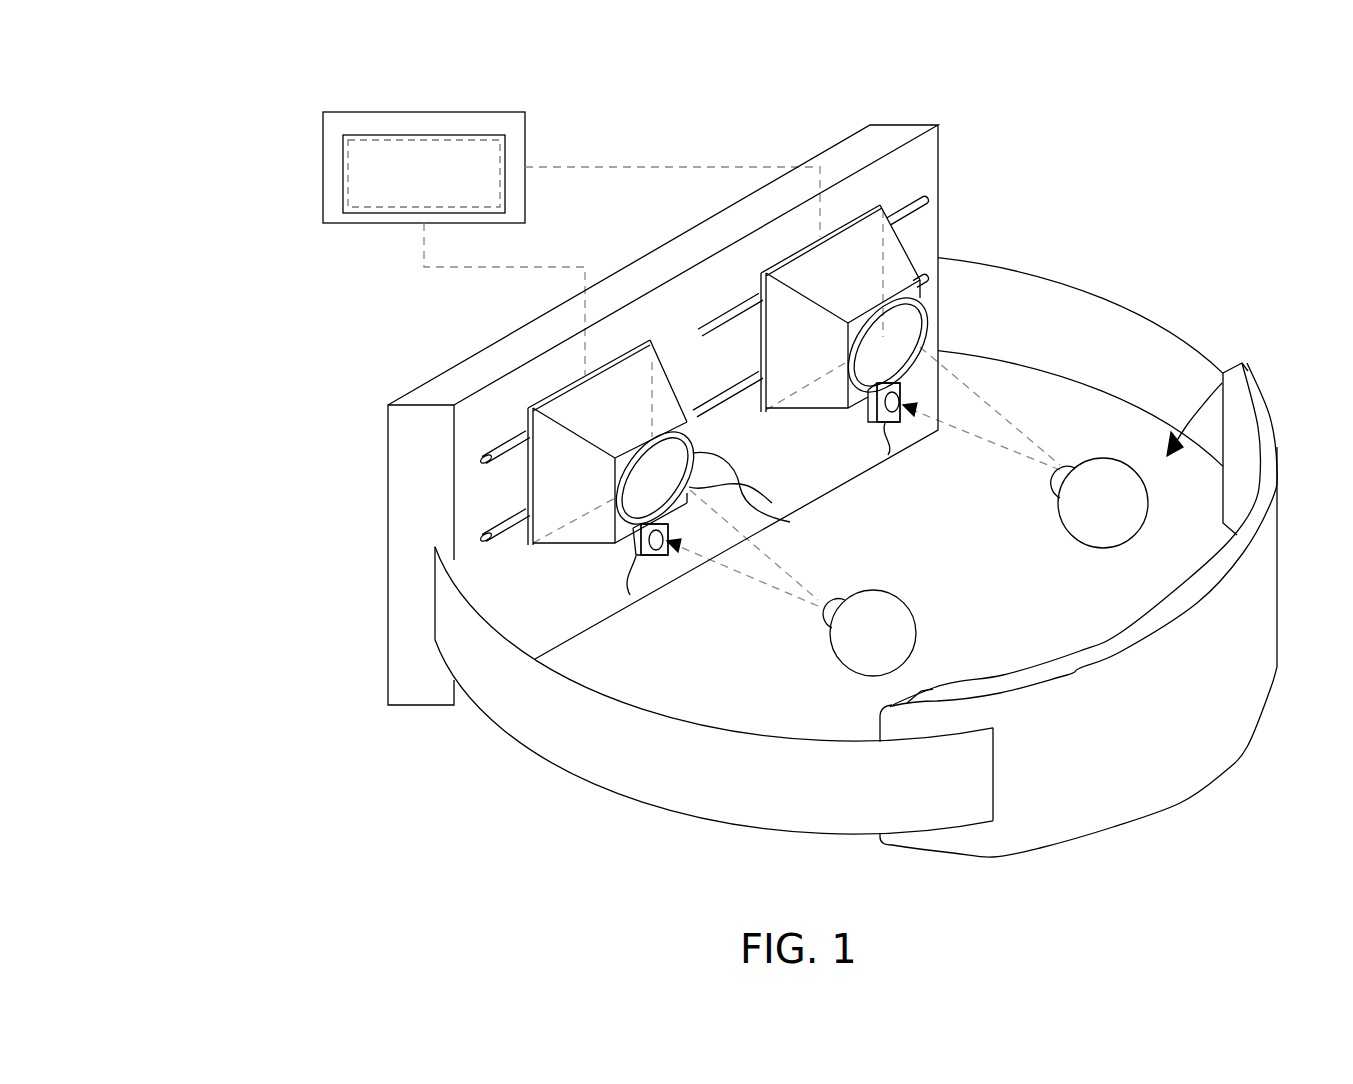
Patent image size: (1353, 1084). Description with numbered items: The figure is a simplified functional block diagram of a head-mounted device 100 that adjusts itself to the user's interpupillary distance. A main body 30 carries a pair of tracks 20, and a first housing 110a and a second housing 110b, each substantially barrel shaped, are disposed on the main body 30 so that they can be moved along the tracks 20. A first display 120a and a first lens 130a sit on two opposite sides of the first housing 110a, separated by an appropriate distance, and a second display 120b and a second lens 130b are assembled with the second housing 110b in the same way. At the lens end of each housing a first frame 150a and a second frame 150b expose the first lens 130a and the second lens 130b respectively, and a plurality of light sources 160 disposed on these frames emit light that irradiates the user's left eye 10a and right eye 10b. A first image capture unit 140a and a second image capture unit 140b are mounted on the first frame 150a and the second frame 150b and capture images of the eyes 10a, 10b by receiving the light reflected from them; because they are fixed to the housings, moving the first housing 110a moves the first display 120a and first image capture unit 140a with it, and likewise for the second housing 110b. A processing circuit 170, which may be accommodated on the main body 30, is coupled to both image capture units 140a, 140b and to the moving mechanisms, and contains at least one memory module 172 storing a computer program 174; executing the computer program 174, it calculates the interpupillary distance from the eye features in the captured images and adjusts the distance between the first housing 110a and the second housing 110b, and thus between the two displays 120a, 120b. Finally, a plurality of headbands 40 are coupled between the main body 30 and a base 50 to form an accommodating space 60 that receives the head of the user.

The head-mounted device 100 is at (143, 67).
The left eye 10a is at (873, 590).
The right eye 10b is at (1108, 457).
The tracks 20 is at (455, 481).
The main body 30 is at (905, 122).
The headbands 40 is at (1190, 345).
The base 50 is at (1165, 800).
The accommodating space 60 is at (1248, 370).
The first housing 110a is at (558, 422).
The second housing 110b is at (920, 293).
The first display 120a is at (650, 363).
The second display 120b is at (898, 240).
The first lens 130a is at (665, 553).
The second lens 130b is at (878, 335).
The first image capture unit 140a is at (655, 505).
The second image capture unit 140b is at (884, 422).
The first frame 150a is at (630, 595).
The second frame 150b is at (927, 328).
The light sources 160 is at (766, 495).
The processing circuit 170 is at (446, 112).
The memory module 172 is at (345, 164).
The computer program 174 is at (345, 192).